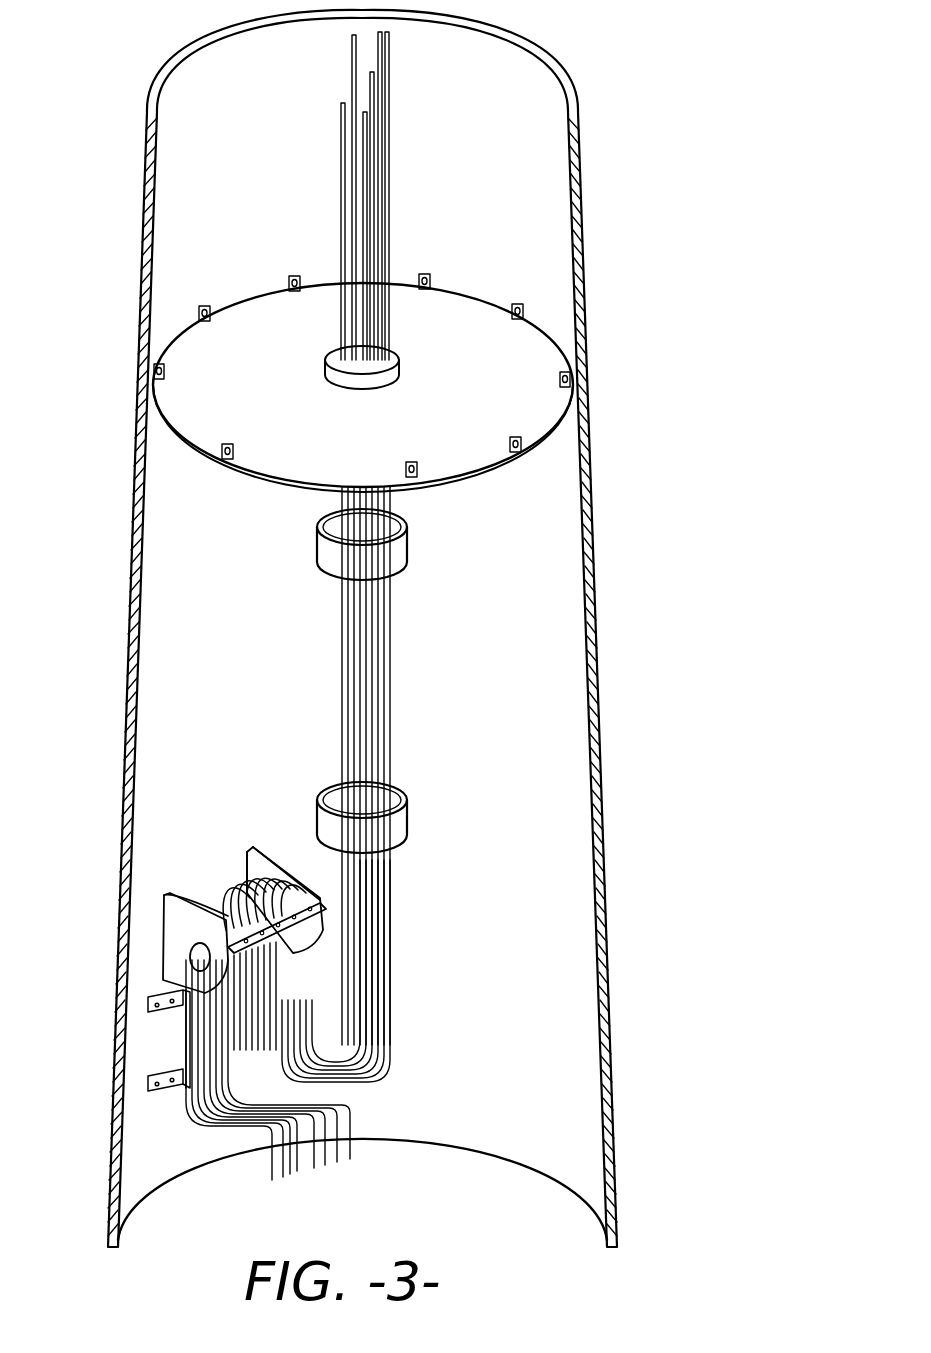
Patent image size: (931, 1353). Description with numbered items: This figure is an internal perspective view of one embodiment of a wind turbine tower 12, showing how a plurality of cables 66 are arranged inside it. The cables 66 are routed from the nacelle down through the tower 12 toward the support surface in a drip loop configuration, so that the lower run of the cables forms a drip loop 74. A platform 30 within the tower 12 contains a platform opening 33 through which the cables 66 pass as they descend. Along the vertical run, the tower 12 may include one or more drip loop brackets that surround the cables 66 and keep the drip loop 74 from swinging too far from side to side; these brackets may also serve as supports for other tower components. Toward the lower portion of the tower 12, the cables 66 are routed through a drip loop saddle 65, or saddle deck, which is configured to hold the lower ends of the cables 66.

The tower 12 is at (140, 280).
The platform 30 is at (178, 445).
The platform opening 33 is at (398, 366).
The drip loop saddle 65 is at (178, 930).
The cables 66 is at (388, 692).
The drip loop 74 is at (403, 1057).